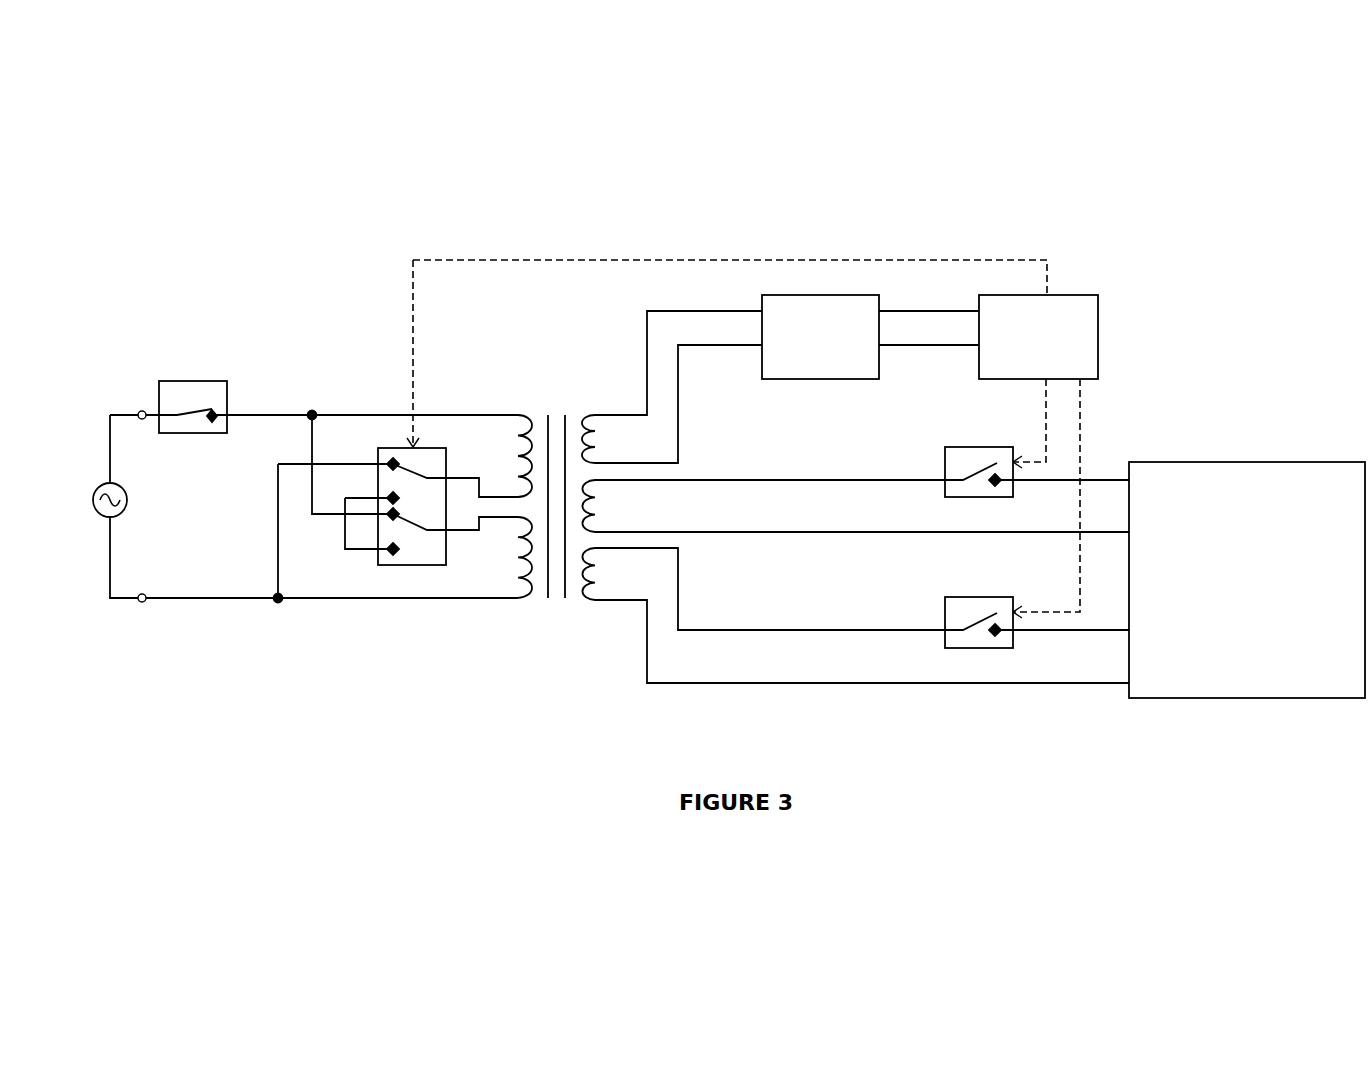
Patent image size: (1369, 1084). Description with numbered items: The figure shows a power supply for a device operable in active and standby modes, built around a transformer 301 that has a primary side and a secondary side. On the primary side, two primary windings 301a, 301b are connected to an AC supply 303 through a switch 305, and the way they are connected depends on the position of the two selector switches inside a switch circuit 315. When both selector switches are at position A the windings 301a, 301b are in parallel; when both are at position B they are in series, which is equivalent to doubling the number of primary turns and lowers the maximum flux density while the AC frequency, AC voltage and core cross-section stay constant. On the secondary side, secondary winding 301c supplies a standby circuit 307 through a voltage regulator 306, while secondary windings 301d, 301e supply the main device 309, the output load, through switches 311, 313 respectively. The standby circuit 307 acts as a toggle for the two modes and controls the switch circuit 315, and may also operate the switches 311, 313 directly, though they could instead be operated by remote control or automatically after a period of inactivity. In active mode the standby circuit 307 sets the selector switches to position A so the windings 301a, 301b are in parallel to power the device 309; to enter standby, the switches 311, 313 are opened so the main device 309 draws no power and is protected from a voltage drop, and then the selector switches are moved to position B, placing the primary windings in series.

The transformer 301 is at (801, 497).
The primary winding 301a is at (503, 456).
The primary winding 301b is at (502, 557).
The secondary winding 301c is at (672, 387).
The secondary winding 301d is at (855, 506).
The secondary winding 301e is at (855, 615).
The AC supply 303 is at (96, 463).
The switch 305 is at (241, 376).
The voltage regulator 306 is at (869, 286).
The standby circuit 307 is at (1112, 301).
The main device 309 is at (1279, 453).
The switch 311 is at (975, 425).
The switch 313 is at (968, 577).
The switch circuit 315 is at (460, 456).